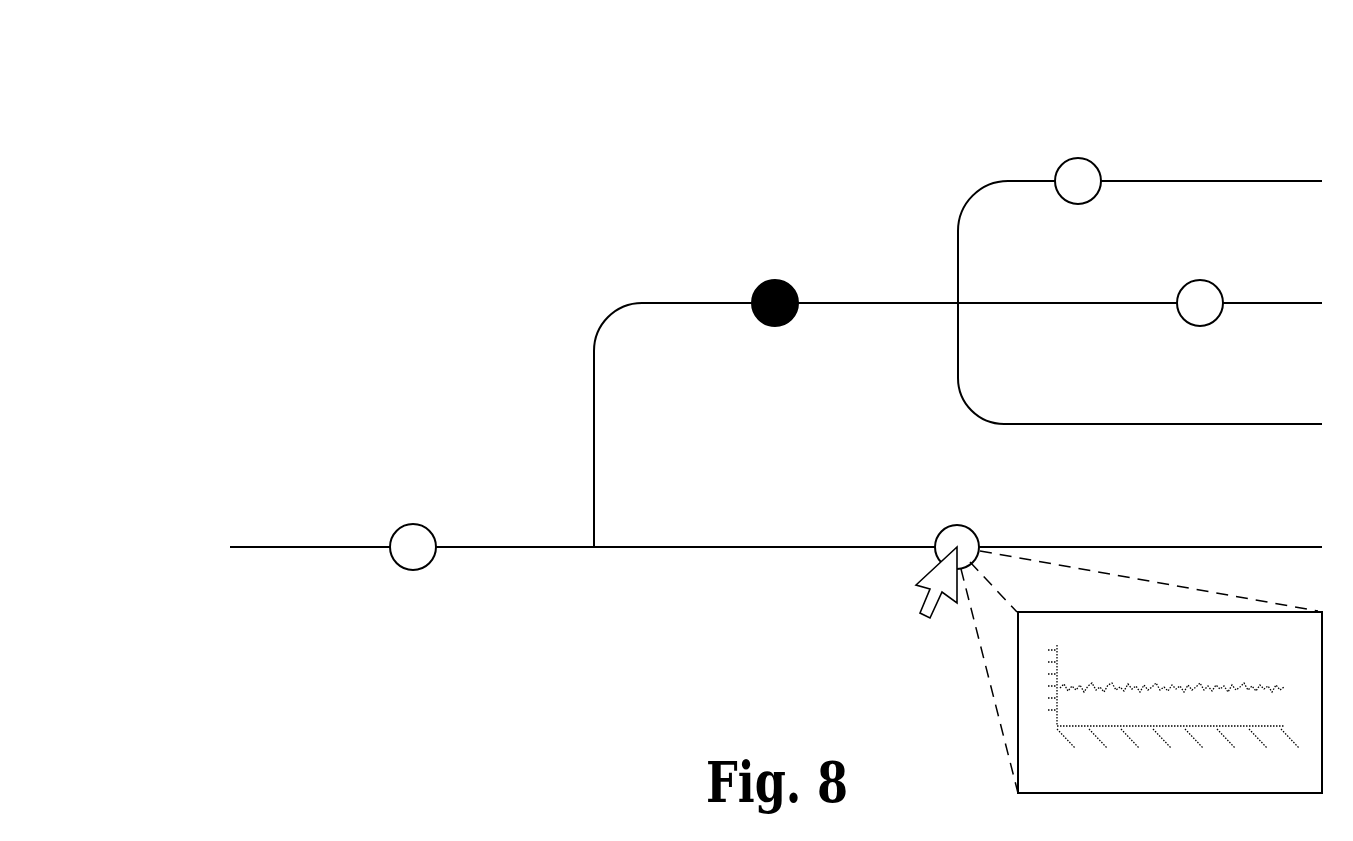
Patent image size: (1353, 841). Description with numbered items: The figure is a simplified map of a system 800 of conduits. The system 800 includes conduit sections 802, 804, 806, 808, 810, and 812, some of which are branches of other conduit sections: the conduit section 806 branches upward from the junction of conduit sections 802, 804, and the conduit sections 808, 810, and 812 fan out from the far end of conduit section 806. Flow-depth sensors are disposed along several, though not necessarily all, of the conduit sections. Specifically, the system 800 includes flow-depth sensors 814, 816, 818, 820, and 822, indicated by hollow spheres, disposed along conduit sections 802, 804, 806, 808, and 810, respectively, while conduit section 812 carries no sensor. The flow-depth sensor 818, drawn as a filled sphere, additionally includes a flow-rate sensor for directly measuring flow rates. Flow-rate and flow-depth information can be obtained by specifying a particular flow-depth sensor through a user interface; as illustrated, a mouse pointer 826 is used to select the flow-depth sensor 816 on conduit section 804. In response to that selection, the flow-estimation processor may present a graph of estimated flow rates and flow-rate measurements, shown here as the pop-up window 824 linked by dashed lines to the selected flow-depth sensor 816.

The system 800 is at (318, 89).
The conduit section 802 is at (290, 546).
The conduit section 804 is at (686, 546).
The conduit section 806 is at (658, 302).
The conduit section 808 is at (1020, 180).
The conduit section 810 is at (1018, 304).
The conduit section 812 is at (1015, 425).
The flow-depth sensor 814 is at (414, 524).
The flow-depth sensor 816 is at (958, 525).
The flow-depth sensor 818 is at (776, 280).
The flow-depth sensor 820 is at (1079, 158).
The flow-depth sensor 822 is at (1201, 280).
The pop-up signal display window 824 is at (1116, 795).
The mouse pointer 826 is at (927, 617).